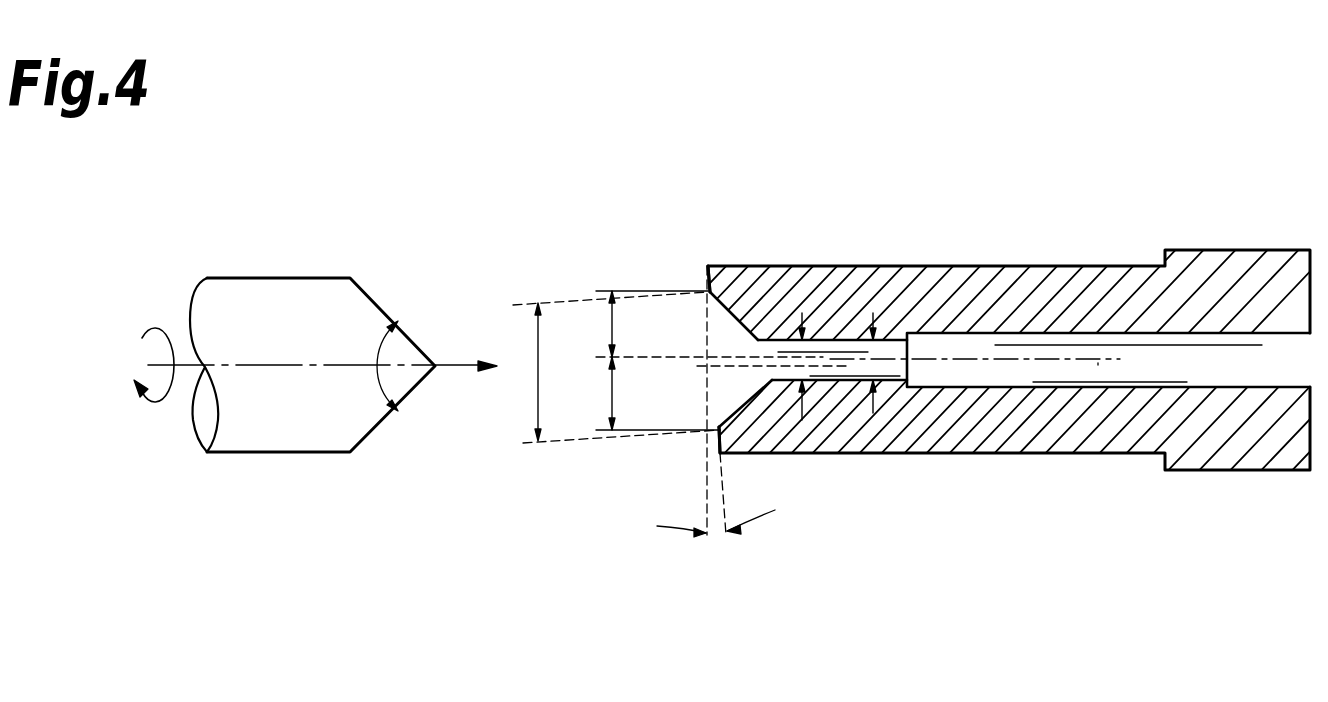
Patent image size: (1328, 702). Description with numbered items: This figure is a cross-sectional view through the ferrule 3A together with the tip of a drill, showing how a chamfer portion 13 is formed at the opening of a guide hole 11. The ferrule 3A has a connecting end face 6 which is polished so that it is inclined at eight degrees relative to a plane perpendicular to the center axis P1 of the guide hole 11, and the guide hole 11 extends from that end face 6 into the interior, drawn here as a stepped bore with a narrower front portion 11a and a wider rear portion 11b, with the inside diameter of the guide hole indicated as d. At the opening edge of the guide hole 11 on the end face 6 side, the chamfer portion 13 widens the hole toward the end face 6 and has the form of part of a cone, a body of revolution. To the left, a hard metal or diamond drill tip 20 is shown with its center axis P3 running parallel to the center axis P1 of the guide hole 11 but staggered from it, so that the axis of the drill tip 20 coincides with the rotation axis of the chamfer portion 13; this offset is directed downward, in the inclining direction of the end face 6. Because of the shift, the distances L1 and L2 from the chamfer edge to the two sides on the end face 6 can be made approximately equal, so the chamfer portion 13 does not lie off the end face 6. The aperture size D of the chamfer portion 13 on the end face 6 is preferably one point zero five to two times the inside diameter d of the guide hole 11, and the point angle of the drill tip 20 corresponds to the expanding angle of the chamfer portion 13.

The ferrule 3A is at (1105, 266).
The connecting end face 6 is at (708, 290).
The guide hole 11 is at (967, 345).
The small-diameter bore portion 11a is at (848, 367).
The large-diameter bore portion 11b is at (1098, 363).
The chamfer portion 13 is at (733, 322).
The drill tip 20 is at (297, 437).
The center axis of guide hole P1 is at (980, 360).
The center axis of drill tip P3 is at (292, 365).
The aperture size of chamfer portion D is at (611, 367).
The distance L1 is at (695, 324).
The distance L2 is at (643, 393).
The inside diameter of guide hole d is at (873, 352).